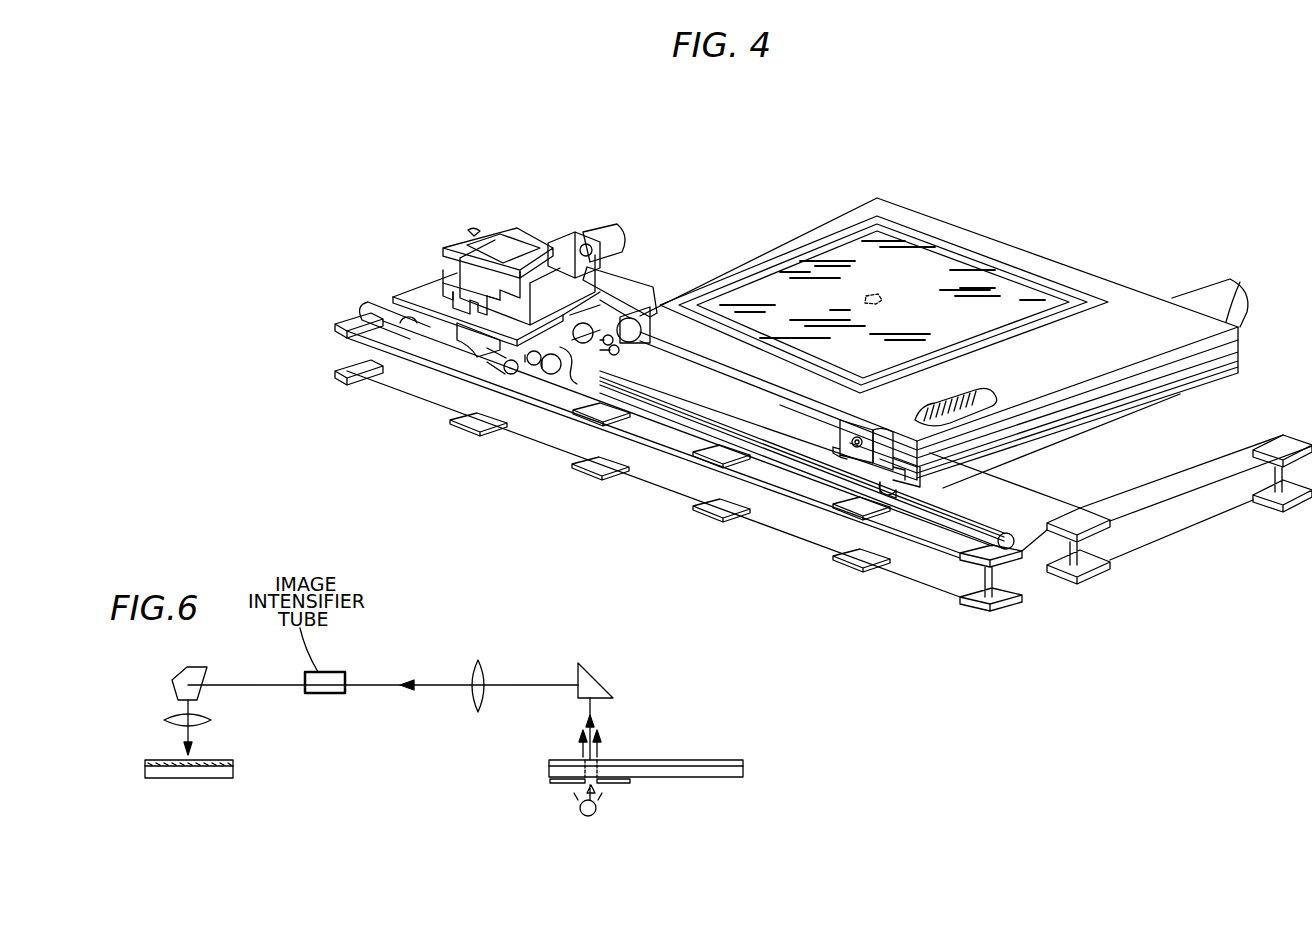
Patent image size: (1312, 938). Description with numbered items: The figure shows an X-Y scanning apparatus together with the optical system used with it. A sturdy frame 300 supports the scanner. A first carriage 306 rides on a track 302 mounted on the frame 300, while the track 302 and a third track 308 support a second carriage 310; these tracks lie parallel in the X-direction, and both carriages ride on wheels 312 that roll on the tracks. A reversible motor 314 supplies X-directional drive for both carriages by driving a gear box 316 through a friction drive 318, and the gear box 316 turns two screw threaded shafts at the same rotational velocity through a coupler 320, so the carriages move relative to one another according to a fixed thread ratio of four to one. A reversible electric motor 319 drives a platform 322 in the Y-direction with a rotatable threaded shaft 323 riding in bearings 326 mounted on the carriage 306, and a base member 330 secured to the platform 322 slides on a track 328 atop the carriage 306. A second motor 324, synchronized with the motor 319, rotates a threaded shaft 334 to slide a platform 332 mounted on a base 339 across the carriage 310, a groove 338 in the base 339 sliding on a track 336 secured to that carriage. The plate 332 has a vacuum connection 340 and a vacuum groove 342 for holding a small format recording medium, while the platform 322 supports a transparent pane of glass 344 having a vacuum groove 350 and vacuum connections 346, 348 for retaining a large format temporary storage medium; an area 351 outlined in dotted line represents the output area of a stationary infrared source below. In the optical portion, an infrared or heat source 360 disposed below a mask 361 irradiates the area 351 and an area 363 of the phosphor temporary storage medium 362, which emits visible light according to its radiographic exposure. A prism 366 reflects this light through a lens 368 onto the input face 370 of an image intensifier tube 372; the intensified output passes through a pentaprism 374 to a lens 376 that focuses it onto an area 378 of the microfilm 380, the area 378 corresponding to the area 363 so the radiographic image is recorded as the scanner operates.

In FIG. 4, the frame 300 is at (1190, 514).
In FIG. 4, the track 302 is at (1010, 553).
In FIG. 4, the first carriage 306 is at (757, 410).
In FIG. 4, the third track 308 is at (590, 328).
In FIG. 4, the second carriage 310 is at (395, 292).
In FIG. 4, the wheels 312 is at (497, 353).
In FIG. 4, the reversible motor 314 is at (645, 332).
In FIG. 4, the gear box 316 is at (560, 350).
In FIG. 4, the friction drive 318 is at (660, 315).
In FIG. 4, the reversible electric motor 319 is at (1228, 290).
In FIG. 4, the coupler 320 is at (537, 372).
In FIG. 4, the platform 322 is at (1120, 347).
In FIG. 4, the rotatable threaded shaft 323 is at (968, 400).
In FIG. 4, the reversible electric motor 324 is at (608, 232).
In FIG. 4, the bearings 326 is at (840, 428).
In FIG. 4, the track 328 is at (865, 480).
In FIG. 4, the base member 330 is at (1240, 350).
In FIG. 4, the platform 332 is at (497, 241).
In FIG. 6, the platform 332 is at (216, 778).
In FIG. 4, the threaded shaft 334 is at (568, 236).
In FIG. 4, the track 336 is at (460, 310).
In FIG. 4, the groove 338 is at (450, 292).
In FIG. 4, the base 339 is at (541, 299).
In FIG. 4, the vacuum connection 340 is at (468, 232).
In FIG. 4, the vacuum groove 342 is at (520, 240).
In FIG. 4, the transparent pane of glass 344 is at (883, 304).
In FIG. 6, the transparent pane of glass 344 is at (728, 778).
In FIG. 4, the vacuum connection 346 is at (940, 227).
In FIG. 4, the vacuum connection 348 is at (1066, 276).
In FIG. 4, the vacuum groove 350 is at (968, 334).
In FIG. 4, the area 351 is at (862, 300).
In FIG. 6, the area 351 is at (585, 770).
In FIG. 6, the infrared or heat source 360 is at (597, 808).
In FIG. 6, the mask 361 is at (550, 782).
In FIG. 6, the temporary storage medium 362 is at (708, 760).
In FIG. 6, the area 363 is at (597, 760).
In FIG. 6, the prism 366 is at (605, 682).
In FIG. 6, the lens 368 is at (483, 668).
In FIG. 6, the input face 370 is at (347, 693).
In FIG. 6, the image intensifier tube 372 is at (330, 673).
In FIG. 6, the pentaprism 374 is at (196, 672).
In FIG. 6, the lens 376 is at (207, 720).
In FIG. 6, the area 378 is at (192, 760).
In FIG. 6, the microfilm 380 is at (150, 760).